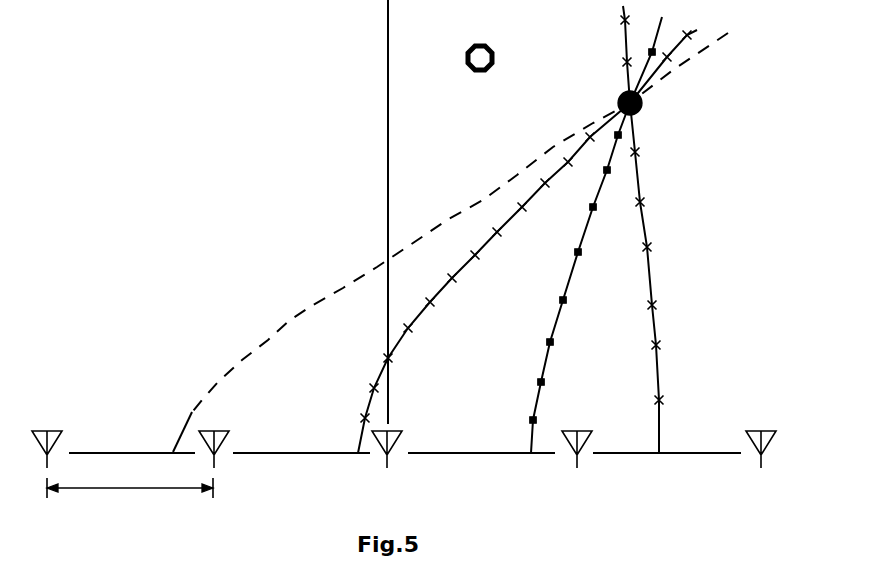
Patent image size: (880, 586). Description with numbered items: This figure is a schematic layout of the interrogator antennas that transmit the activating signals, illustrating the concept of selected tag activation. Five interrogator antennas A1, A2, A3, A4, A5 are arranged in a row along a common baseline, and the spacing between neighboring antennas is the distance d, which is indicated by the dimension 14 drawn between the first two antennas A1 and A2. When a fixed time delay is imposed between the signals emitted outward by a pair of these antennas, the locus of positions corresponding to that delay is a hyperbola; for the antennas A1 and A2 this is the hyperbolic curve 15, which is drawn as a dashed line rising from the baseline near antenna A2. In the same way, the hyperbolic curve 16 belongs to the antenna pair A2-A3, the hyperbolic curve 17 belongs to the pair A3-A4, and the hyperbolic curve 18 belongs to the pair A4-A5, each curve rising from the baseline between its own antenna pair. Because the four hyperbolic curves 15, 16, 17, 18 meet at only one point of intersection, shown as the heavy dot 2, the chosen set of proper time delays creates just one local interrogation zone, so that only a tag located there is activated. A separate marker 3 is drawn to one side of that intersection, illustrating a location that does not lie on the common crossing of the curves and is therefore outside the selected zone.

The target / transmitter position 2 is at (649, 104).
The object (circle marker) 3 is at (467, 48).
The antenna spacing d 14 is at (130, 489).
The hyperbolic curve 15 is at (450, 242).
The hyperbolic curve 16 is at (523, 241).
The hyperbolic curve 17 is at (596, 235).
The hyperbolic curve 18 is at (649, 229).
The interrogator antenna A1 is at (47, 432).
The interrogator antenna A2 is at (223, 432).
The interrogator antenna A3 is at (403, 433).
The interrogator antenna A4 is at (593, 437).
The interrogator antenna A5 is at (760, 433).